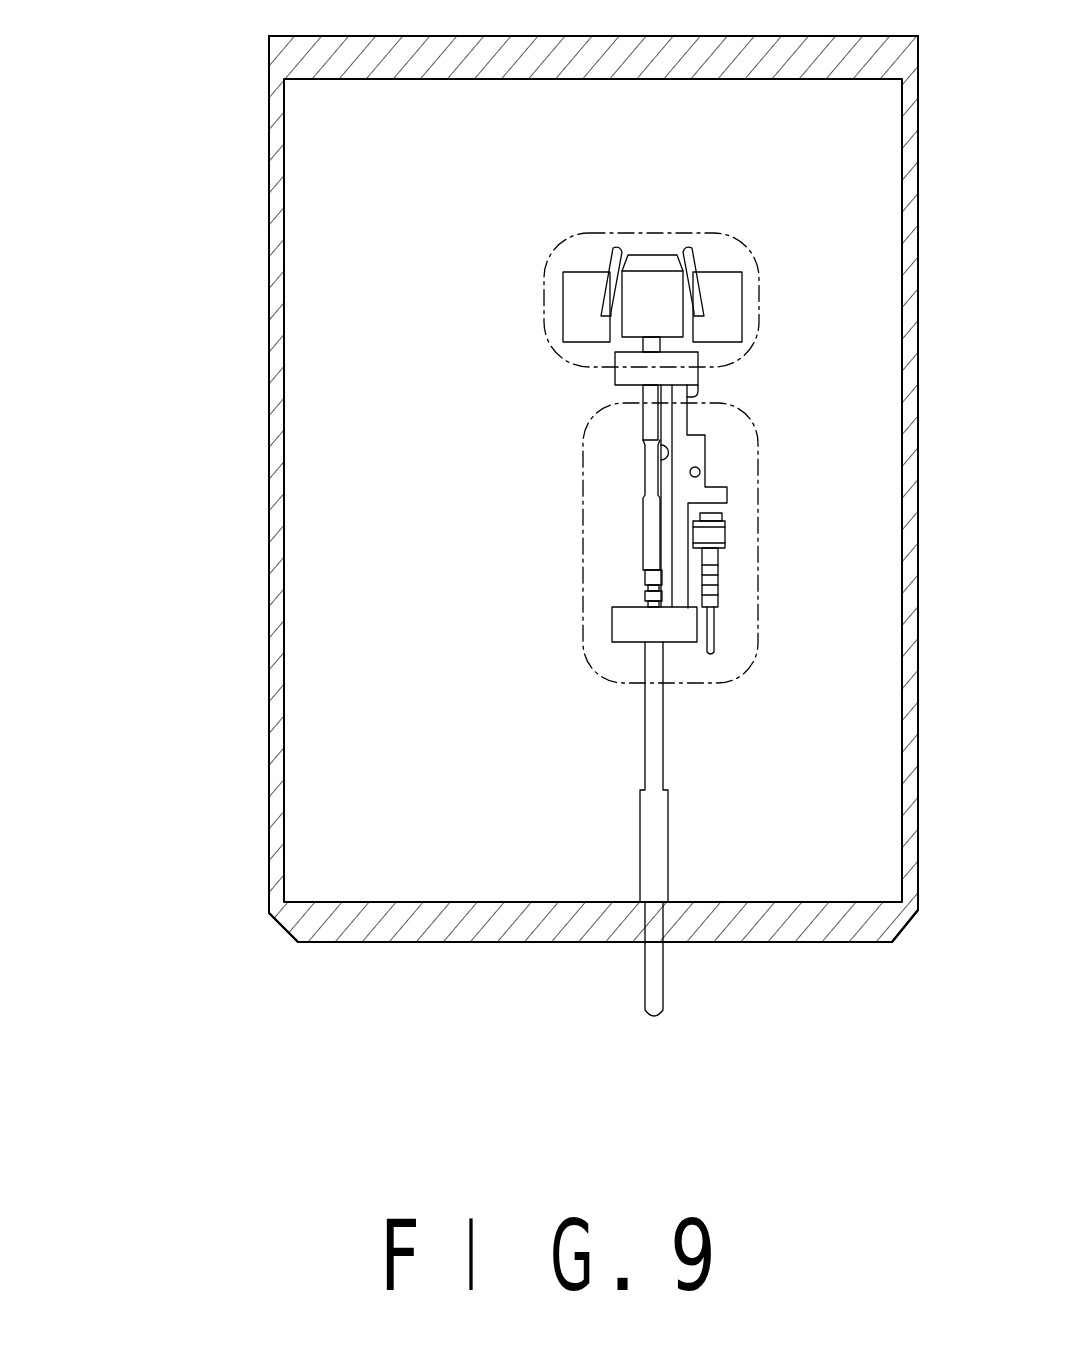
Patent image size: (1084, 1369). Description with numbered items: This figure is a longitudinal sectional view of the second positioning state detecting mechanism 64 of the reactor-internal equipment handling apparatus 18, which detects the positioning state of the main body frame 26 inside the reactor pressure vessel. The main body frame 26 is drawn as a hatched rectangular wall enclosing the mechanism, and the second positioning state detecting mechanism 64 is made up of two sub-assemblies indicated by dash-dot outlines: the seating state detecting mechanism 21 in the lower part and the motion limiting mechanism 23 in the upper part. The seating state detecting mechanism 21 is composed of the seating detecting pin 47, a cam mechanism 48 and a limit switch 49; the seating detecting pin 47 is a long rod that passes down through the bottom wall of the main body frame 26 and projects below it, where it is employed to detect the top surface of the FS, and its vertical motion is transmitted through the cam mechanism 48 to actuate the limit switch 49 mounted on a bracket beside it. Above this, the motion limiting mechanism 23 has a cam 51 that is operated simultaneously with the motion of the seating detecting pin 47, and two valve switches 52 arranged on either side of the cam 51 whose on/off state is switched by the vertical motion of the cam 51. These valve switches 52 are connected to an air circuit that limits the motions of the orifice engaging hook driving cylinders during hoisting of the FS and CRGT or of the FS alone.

The reactor-internal equipment handling apparatus 18 is at (257, 490).
The main body frame 26 is at (268, 92).
The motion limiting mechanism 23 is at (543, 314).
The cam 51 is at (652, 292).
The valve switches 52 is at (730, 312).
The second positioning state detecting mechanism 64 is at (535, 535).
The seating state detecting mechanism 21 is at (575, 580).
The cam mechanism 48 is at (653, 475).
The limit switch 49 is at (713, 562).
The seating detecting pin 47 is at (658, 995).